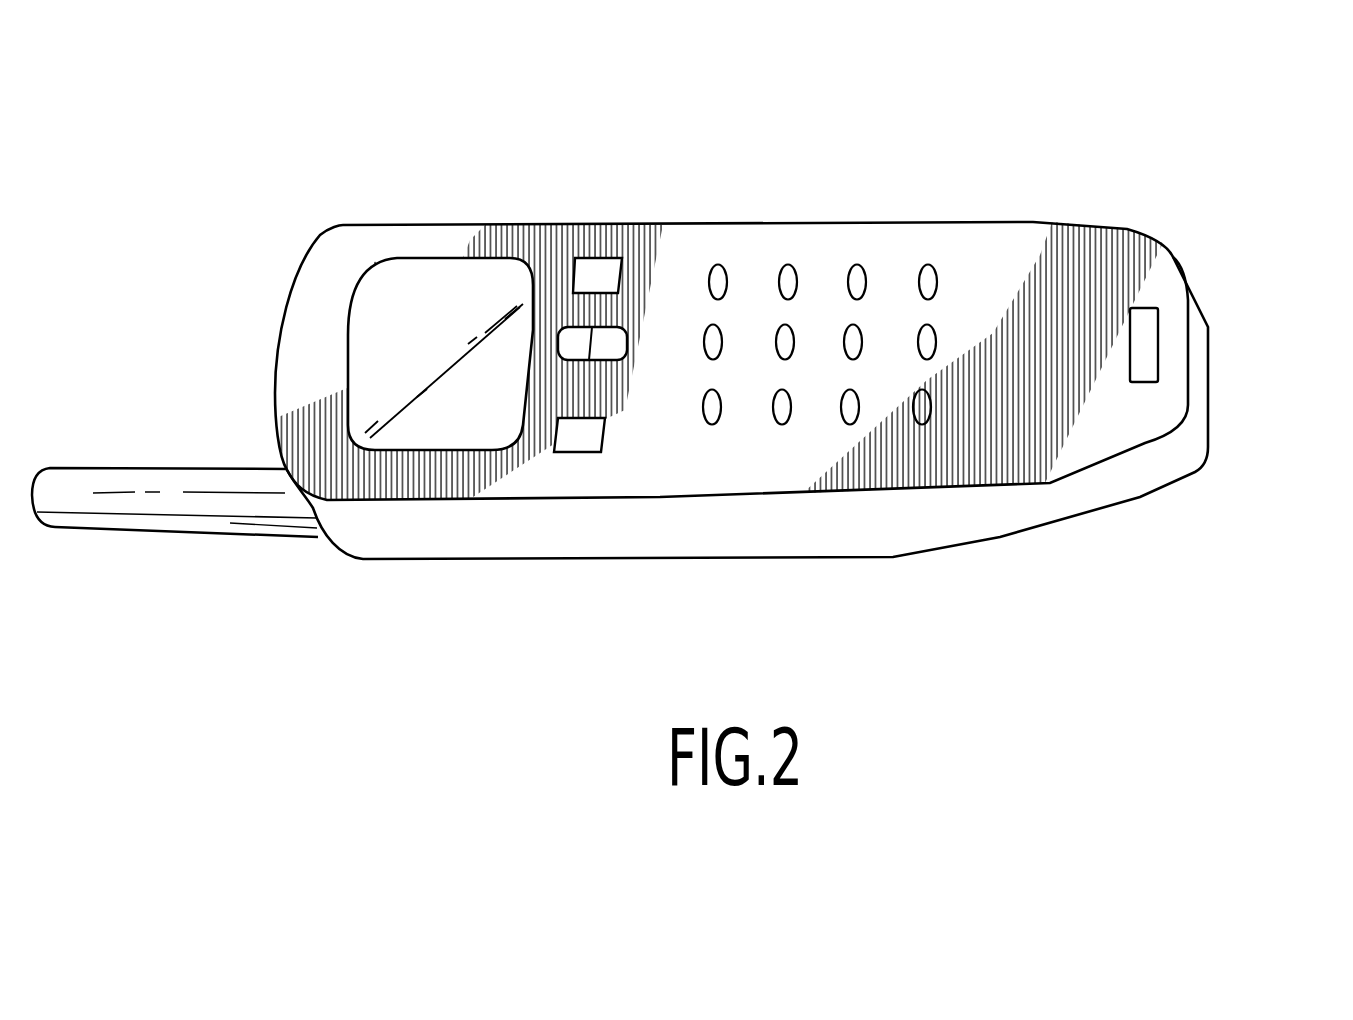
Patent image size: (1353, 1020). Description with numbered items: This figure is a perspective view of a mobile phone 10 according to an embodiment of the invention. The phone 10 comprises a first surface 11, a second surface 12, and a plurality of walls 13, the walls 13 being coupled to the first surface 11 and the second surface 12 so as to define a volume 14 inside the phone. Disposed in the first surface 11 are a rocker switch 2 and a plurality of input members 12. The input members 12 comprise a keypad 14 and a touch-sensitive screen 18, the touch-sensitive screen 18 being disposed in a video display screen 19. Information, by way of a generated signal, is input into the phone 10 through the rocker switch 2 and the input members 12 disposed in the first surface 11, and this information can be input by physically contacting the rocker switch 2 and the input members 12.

The mobile phone 10 is at (1224, 193).
The first surface 11 is at (973, 248).
The second surface 12 is at (788, 270).
The walls 13 is at (597, 273).
The keypad 14 is at (922, 410).
The touch-sensitive screen 18 is at (381, 309).
The video display screen 19 is at (442, 277).
The rocker switch 2 is at (607, 345).